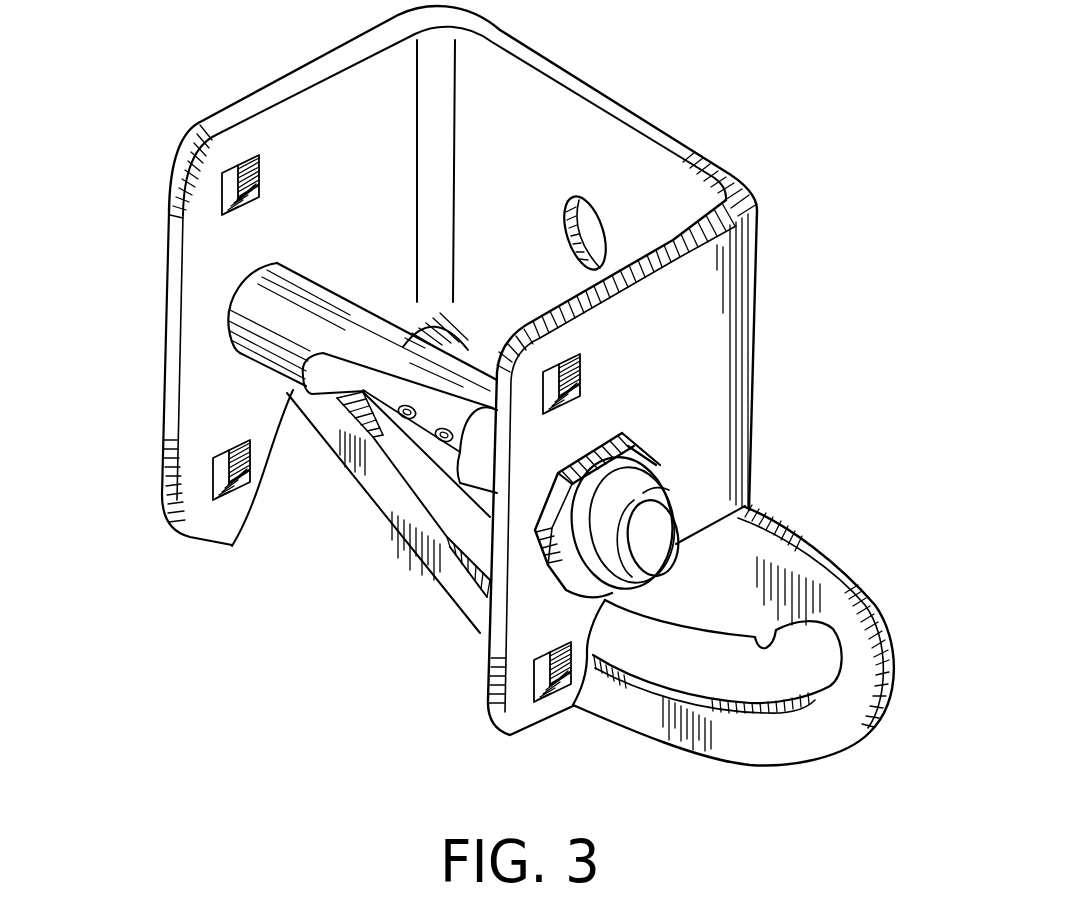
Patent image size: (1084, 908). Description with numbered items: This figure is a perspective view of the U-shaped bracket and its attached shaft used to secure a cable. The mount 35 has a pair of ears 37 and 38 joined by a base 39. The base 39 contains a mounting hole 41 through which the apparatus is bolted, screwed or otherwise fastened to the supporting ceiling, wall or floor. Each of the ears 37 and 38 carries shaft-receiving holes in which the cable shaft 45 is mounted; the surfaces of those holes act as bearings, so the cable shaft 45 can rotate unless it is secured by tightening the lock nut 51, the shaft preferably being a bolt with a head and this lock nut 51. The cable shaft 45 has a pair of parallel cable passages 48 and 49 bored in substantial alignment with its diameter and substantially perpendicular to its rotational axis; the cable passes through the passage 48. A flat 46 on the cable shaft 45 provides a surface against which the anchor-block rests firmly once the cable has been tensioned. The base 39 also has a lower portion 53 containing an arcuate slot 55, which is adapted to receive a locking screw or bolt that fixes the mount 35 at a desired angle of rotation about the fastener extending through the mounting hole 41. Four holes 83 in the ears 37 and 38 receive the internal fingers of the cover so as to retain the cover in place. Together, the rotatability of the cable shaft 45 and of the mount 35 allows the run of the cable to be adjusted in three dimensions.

The mount 35 is at (842, 291).
The ear 37 is at (350, 158).
The ear 38 is at (682, 385).
The base 39 is at (526, 171).
The mounting hole 41 is at (600, 234).
The cable shaft 45 is at (365, 296).
The flat 46 is at (357, 393).
The cable passage 48 is at (403, 419).
The cable passage 49 is at (447, 442).
The lock nut 51 is at (647, 497).
The lower portion 53 is at (852, 695).
The arcuate slot 55 is at (764, 640).
The holes 83 is at (233, 186).